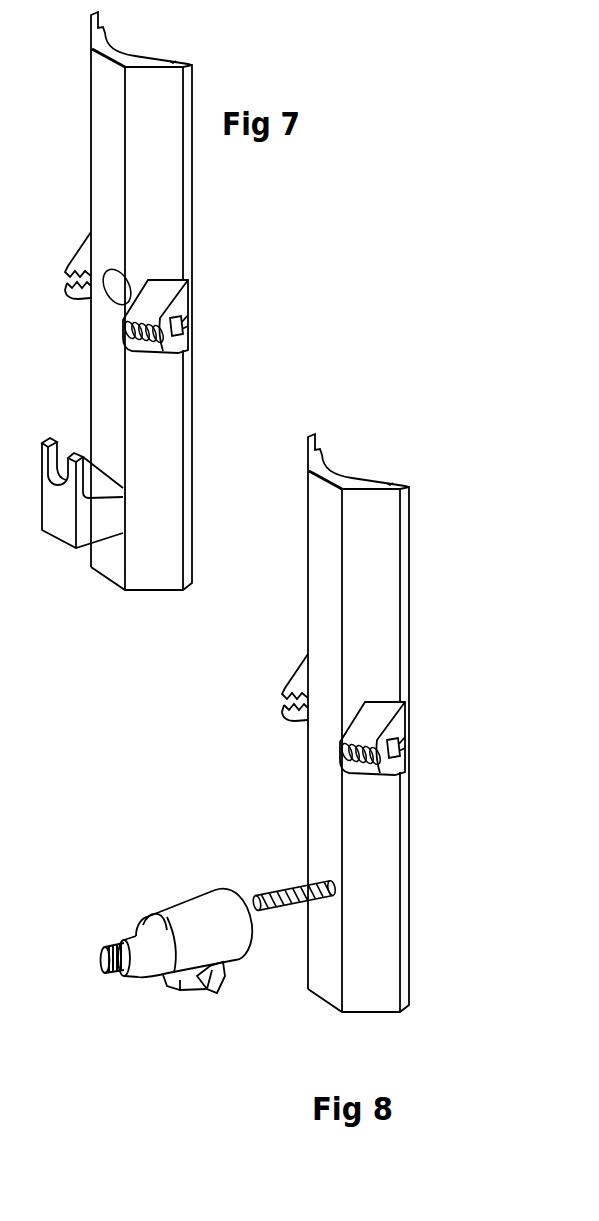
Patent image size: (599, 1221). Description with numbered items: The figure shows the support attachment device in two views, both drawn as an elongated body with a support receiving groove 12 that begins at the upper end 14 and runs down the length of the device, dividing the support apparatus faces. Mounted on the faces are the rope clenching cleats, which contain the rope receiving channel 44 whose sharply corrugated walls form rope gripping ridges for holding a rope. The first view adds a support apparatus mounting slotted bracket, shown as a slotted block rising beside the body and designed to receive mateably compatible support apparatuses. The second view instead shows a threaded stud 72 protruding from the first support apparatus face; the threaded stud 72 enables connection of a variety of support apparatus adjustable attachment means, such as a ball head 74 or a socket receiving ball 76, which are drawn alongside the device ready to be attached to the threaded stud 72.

In FIG. 8, the support receiving groove 12 is at (340, 466).
In FIG. 8, the upper end 14 is at (383, 548).
In FIG. 8, the rope receiving channel 44 is at (395, 742).
In FIG. 8, the threaded stud 72 is at (277, 888).
In FIG. 8, the ball head 74 is at (200, 945).
In FIG. 7, the socket receiving ball 76 is at (57, 517).